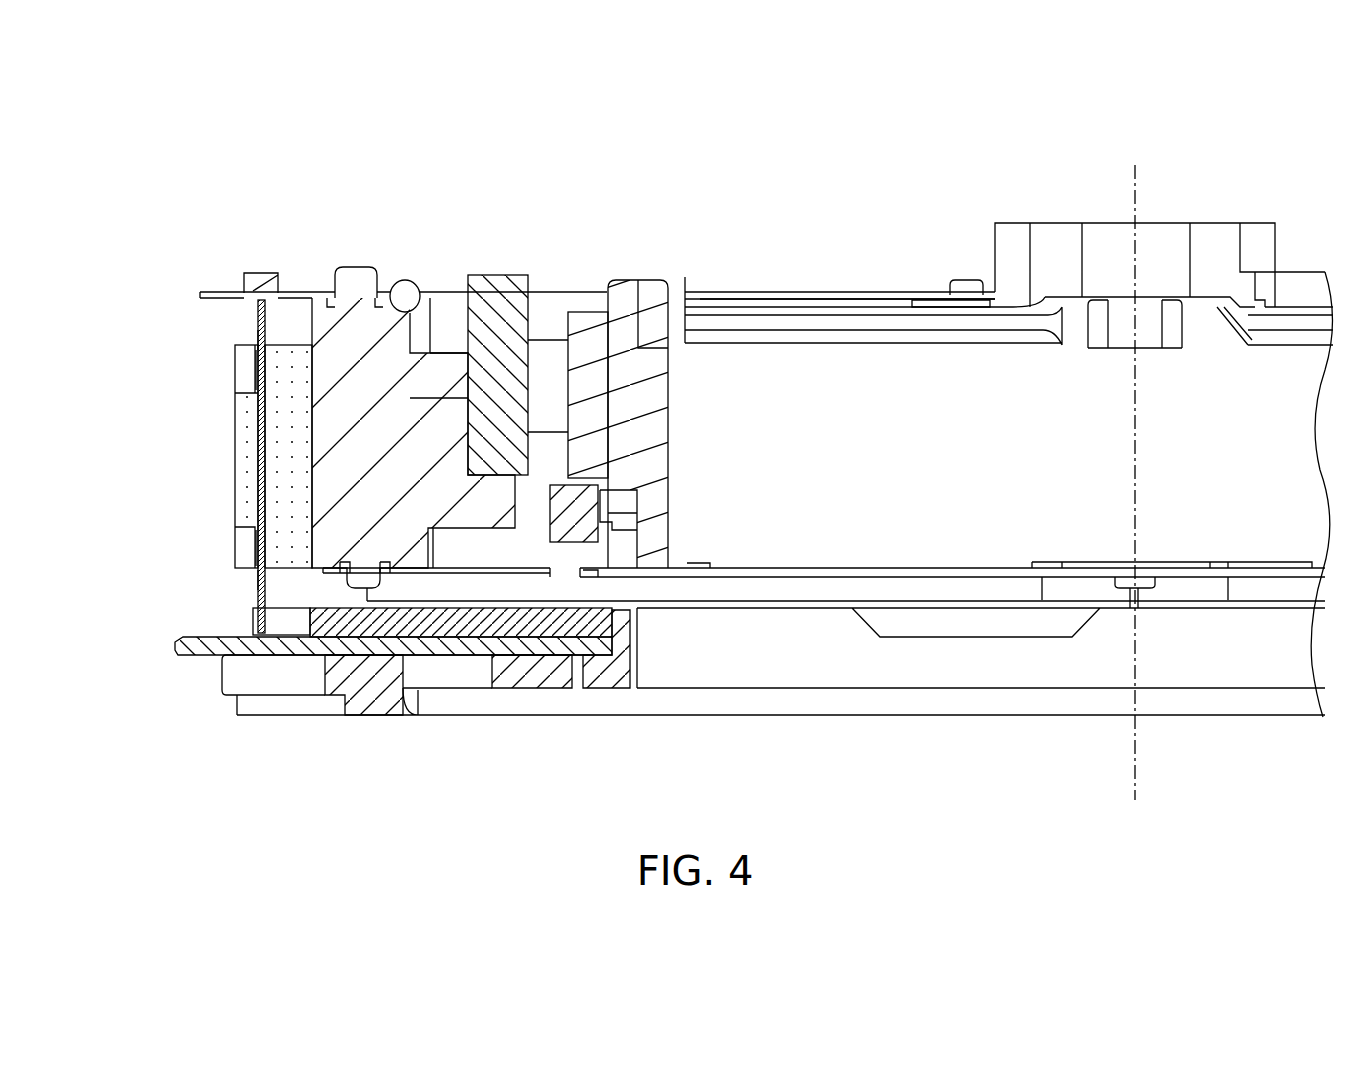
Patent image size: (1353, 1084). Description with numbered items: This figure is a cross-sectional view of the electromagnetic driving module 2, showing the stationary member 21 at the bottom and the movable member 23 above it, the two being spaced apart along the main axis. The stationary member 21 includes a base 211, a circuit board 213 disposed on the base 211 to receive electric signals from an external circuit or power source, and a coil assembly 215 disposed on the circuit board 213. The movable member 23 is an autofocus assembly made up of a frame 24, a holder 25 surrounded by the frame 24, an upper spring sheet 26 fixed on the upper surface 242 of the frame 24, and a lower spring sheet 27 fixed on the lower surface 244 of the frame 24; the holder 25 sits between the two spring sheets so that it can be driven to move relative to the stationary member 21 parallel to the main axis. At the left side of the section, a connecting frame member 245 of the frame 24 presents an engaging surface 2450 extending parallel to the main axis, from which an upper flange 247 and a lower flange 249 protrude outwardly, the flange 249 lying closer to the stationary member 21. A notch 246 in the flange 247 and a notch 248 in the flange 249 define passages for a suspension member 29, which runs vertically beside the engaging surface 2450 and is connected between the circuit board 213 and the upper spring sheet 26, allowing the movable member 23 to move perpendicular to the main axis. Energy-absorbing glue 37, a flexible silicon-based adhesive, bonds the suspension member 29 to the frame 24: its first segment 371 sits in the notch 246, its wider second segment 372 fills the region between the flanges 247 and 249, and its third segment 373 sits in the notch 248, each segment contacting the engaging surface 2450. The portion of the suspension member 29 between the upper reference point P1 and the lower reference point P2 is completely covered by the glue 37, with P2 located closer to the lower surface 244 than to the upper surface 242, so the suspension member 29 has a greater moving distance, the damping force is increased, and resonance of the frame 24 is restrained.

The electromagnetic driving module 2 is at (92, 172).
The stationary member 21 is at (153, 630).
The base 211 is at (372, 695).
The circuit board 213 is at (180, 646).
The coil assembly 215 is at (540, 650).
The movable member 23 is at (153, 283).
The frame 24 is at (356, 264).
The upper surface 242 is at (398, 395).
The lower surface 244 is at (428, 540).
The connecting frame member 245 is at (444, 428).
The engaging surface 2450 is at (300, 500).
The notch 246 is at (296, 368).
The flange 247 is at (242, 361).
The notch 248 is at (297, 548).
The flange 249 is at (242, 540).
The holder 25 is at (608, 282).
The upper spring sheet 26 is at (808, 292).
The lower spring sheet 27 is at (810, 572).
The suspension member 29 is at (256, 322).
The energy-absorbing glue 37 is at (232, 424).
The first segment 371 is at (256, 385).
The second segment 372 is at (246, 456).
The third segment 373 is at (256, 554).
The upper reference point P1 is at (258, 342).
The lower reference point P2 is at (258, 578).